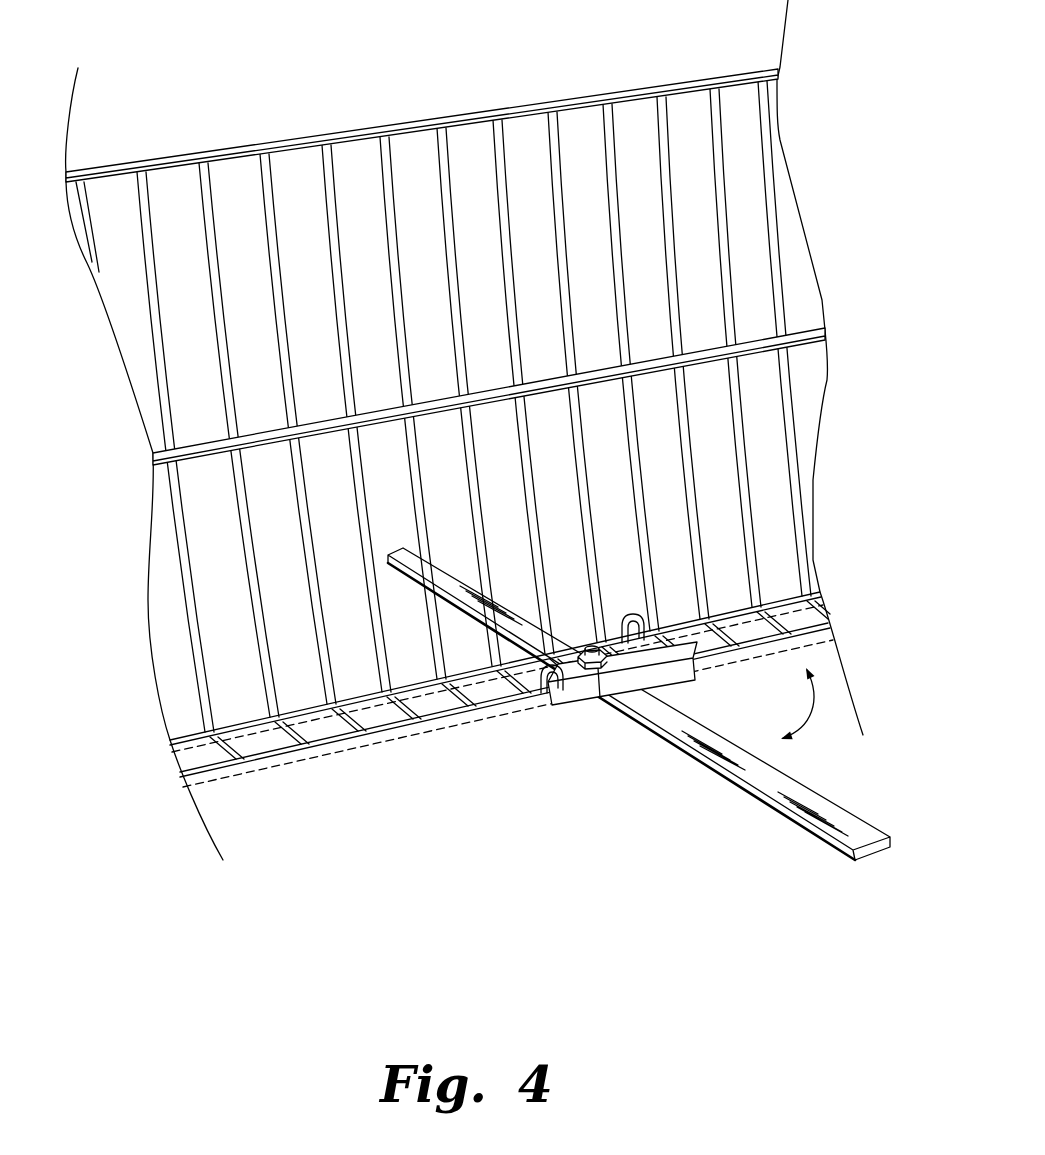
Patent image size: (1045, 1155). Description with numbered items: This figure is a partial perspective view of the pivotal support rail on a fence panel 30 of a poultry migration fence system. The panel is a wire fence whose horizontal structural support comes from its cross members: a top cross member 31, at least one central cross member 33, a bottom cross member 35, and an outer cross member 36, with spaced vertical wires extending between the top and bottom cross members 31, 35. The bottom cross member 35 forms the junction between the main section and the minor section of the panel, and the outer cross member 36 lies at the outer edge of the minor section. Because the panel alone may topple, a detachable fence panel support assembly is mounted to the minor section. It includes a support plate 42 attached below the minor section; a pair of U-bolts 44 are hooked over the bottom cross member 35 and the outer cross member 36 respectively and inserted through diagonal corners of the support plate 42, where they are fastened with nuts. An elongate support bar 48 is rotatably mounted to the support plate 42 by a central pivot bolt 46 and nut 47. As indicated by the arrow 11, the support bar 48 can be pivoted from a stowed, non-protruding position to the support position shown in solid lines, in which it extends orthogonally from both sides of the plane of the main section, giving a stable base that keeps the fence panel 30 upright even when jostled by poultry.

The arrow 11 is at (817, 717).
The fence panel 30 is at (462, 82).
The top cross member 31 is at (378, 128).
The central cross member 33 is at (441, 400).
The bottom cross member 35 is at (684, 616).
The outer cross member 36 is at (730, 650).
The support plate 42 is at (556, 708).
The U-bolts 44 is at (630, 613).
The central pivot bolt 46 is at (592, 648).
The nut 47 is at (600, 698).
The support bar 48 is at (766, 780).